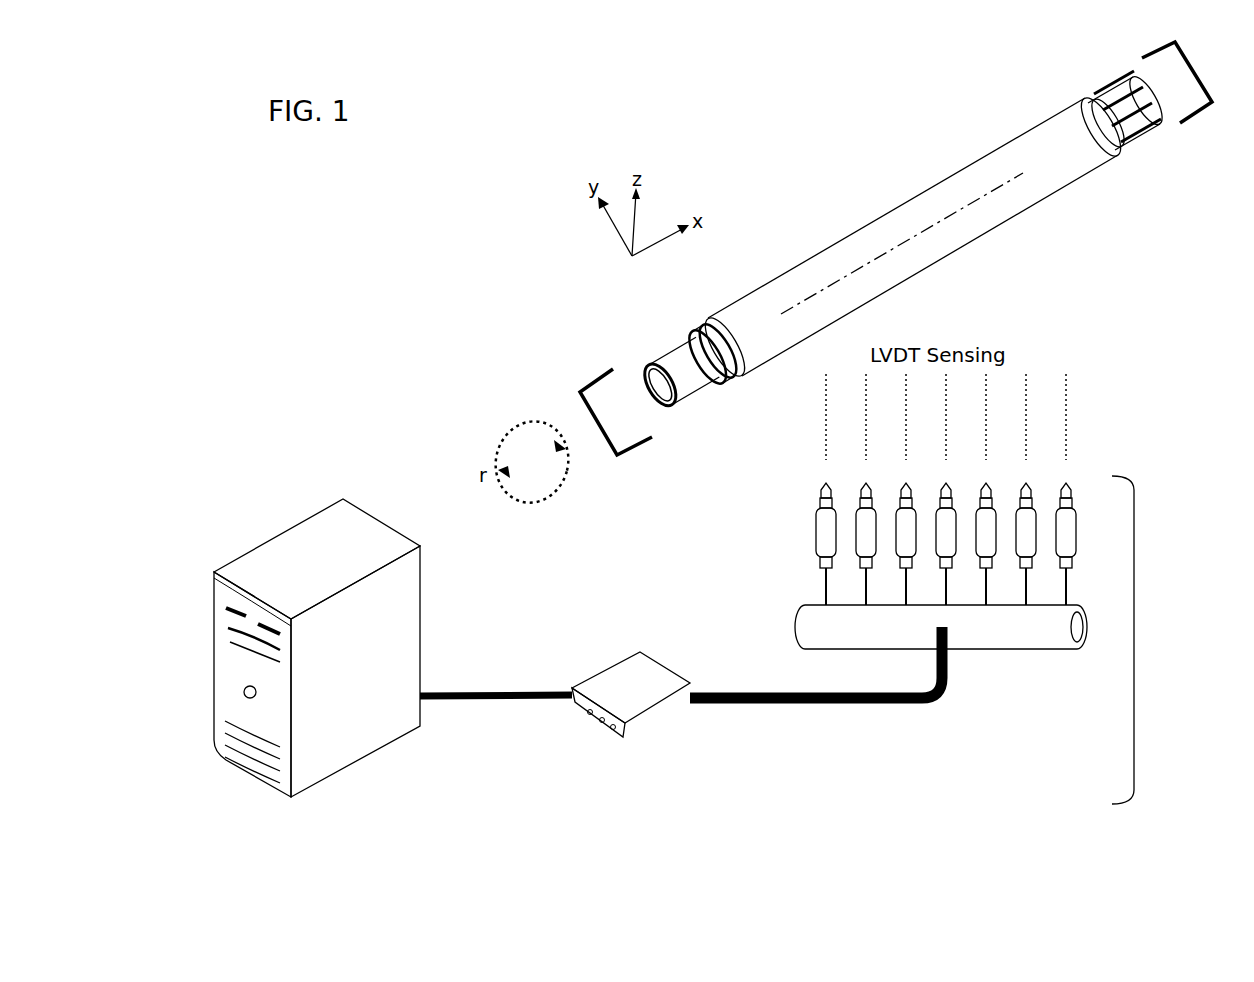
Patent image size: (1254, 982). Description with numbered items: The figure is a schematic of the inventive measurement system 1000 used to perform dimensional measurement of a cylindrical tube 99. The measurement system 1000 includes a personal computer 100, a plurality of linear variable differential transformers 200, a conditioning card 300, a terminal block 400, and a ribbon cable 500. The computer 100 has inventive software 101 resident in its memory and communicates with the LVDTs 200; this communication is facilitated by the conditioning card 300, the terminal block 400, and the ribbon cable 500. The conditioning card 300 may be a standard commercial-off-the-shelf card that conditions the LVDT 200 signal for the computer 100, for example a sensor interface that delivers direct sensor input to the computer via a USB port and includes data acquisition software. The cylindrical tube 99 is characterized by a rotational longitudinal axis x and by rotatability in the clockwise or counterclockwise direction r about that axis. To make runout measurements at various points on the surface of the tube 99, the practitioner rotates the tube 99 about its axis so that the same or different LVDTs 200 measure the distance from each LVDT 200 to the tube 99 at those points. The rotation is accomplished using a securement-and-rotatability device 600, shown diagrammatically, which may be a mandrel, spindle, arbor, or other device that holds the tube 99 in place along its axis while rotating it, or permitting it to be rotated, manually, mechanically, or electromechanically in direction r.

The cylindrical tube 99 is at (877, 217).
The securement-and-rotatability device 600 is at (1198, 120).
The personal computer 100 is at (361, 506).
The inventive software 101 is at (317, 648).
The linear variable differential transformers 200 is at (817, 530).
The conditioning card 300 is at (640, 733).
The terminal block 400 is at (977, 650).
The ribbon cable 500 is at (753, 706).
The measurement system 1000 is at (1134, 642).